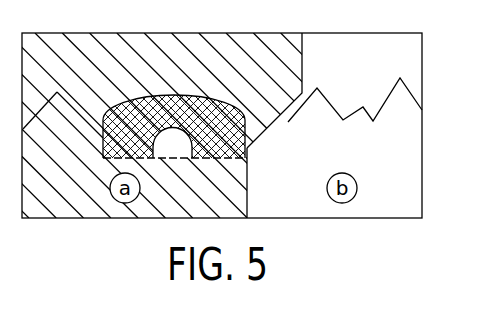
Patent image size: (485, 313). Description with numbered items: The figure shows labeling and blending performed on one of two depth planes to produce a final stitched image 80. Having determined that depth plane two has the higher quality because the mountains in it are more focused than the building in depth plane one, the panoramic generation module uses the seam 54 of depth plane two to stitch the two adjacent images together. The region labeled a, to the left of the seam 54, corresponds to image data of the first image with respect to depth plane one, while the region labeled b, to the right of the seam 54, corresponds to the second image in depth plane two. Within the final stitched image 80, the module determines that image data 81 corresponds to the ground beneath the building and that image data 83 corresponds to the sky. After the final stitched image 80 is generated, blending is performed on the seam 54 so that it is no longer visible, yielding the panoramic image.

The final stitched image 80 is at (423, 70).
The image data 83 is at (306, 43).
The seam 54 is at (268, 127).
The image data 81 is at (254, 164).